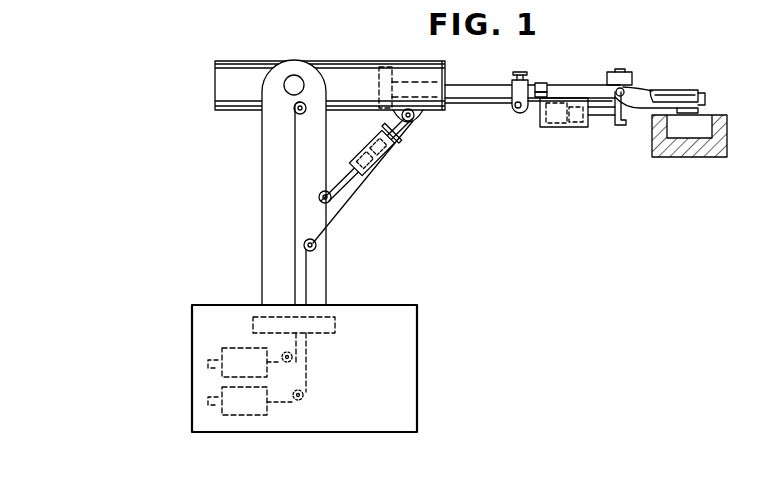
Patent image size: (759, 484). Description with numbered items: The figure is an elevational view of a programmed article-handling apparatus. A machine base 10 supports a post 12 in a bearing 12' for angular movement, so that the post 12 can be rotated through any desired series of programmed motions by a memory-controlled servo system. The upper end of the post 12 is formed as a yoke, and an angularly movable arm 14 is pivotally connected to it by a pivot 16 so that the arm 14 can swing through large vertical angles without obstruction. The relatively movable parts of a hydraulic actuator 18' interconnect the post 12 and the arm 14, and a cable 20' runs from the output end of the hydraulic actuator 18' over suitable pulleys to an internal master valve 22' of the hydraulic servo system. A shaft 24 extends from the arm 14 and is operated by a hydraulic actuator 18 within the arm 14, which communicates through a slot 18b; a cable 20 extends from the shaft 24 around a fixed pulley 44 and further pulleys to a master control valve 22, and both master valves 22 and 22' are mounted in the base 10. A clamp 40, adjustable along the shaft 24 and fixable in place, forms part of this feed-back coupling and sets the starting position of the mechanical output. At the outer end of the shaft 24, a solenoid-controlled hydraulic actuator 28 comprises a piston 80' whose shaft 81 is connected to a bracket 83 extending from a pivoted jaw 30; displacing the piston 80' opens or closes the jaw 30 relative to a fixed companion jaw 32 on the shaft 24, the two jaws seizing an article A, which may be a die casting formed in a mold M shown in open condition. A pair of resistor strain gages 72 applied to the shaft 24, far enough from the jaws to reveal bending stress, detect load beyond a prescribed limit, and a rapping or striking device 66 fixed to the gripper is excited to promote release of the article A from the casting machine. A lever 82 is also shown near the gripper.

The machine base 10 is at (420, 347).
The post 12 is at (268, 182).
The bearing 12' is at (318, 340).
The arm 14 is at (272, 58).
The pivot 16 is at (296, 77).
The hydraulic actuator 18 is at (418, 67).
The slot 18b is at (385, 66).
The hydraulic actuator 18' is at (372, 156).
The cable 20 is at (261, 203).
The cable 20' is at (358, 186).
The master control valve 22 is at (218, 411).
The master valve 22' is at (211, 352).
The shaft 24 is at (472, 84).
The solenoid-controlled hydraulic actuator 28 is at (540, 120).
The jaw 30 is at (707, 100).
The companion jaw 32 is at (681, 89).
The clamp 40 is at (515, 78).
The fixed pulley 44 is at (300, 114).
The striking device 66 is at (614, 70).
The strain gages 72 is at (543, 82).
The piston 80' is at (560, 137).
The shaft 81 is at (598, 116).
The lever 82 is at (626, 89).
The bracket 83 is at (619, 127).
The article A is at (706, 92).
The mold M is at (683, 152).